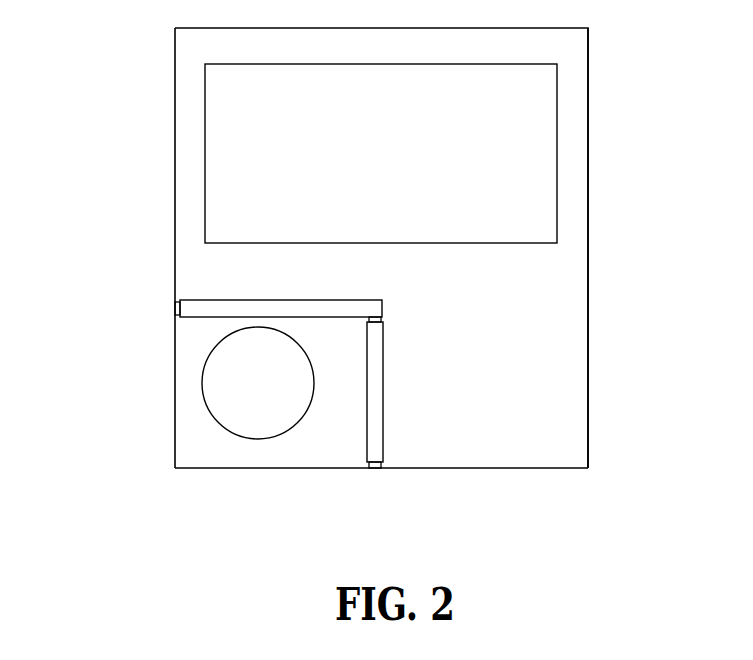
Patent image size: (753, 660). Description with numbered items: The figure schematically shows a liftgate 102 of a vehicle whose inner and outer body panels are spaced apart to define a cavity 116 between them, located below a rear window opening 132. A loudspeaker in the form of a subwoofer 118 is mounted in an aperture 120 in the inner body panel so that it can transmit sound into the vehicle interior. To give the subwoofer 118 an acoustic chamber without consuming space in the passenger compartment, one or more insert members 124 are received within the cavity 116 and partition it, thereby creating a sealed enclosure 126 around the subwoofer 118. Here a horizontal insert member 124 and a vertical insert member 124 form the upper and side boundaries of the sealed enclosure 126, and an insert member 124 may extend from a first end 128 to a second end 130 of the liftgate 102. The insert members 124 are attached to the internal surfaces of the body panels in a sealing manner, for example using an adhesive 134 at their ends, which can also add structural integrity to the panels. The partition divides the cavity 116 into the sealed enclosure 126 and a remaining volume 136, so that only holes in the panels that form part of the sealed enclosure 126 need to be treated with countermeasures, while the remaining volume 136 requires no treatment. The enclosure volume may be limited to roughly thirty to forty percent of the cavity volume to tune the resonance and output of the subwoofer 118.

The liftgate 102 is at (140, 120).
The cavity 116 is at (568, 415).
The subwoofer 118 is at (245, 389).
The aperture 120 is at (208, 353).
The insert member 124 is at (275, 300).
The sealed enclosure 126 is at (202, 450).
The first end 128 is at (175, 296).
The second end 130 is at (588, 288).
The rear window opening 132 is at (527, 137).
The adhesive 134 is at (380, 320).
The remaining volume 136 is at (499, 357).